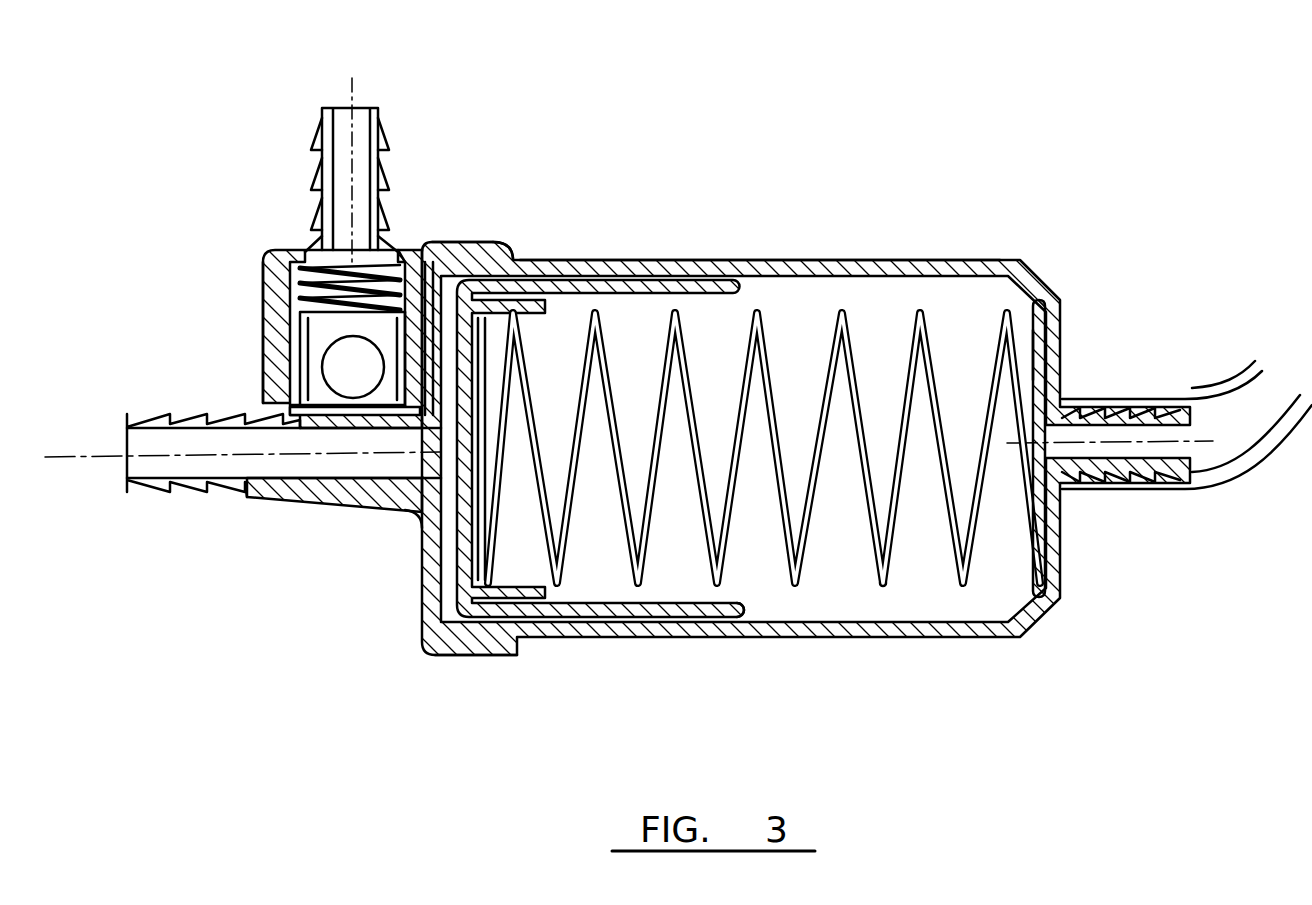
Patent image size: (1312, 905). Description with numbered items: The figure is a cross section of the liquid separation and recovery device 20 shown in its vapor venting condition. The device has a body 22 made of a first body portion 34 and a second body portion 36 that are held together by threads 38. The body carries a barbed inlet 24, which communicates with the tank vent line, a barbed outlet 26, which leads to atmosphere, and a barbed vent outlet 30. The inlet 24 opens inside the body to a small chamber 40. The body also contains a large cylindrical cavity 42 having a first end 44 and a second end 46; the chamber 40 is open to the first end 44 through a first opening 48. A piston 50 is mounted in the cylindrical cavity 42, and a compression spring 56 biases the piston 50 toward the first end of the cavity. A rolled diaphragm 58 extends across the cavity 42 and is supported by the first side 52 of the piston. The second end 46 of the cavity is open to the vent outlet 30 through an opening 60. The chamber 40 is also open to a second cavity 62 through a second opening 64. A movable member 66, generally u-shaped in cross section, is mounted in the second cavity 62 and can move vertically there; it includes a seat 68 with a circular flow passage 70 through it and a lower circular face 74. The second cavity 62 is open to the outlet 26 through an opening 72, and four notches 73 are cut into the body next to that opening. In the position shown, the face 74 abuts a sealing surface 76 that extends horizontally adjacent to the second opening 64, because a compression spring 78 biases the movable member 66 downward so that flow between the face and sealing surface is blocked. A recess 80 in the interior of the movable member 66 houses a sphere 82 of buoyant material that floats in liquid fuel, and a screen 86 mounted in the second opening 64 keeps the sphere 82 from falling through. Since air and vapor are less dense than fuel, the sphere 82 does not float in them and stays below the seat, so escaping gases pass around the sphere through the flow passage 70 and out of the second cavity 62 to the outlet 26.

The liquid separation and recovery device 20 is at (693, 712).
The body 22 is at (833, 637).
The inlet 24 is at (148, 474).
The outlet 26 is at (335, 106).
The vent outlet 30 is at (1117, 473).
The first body portion 34 is at (487, 242).
The second body portion 36 is at (657, 262).
The threads 38 is at (503, 252).
The small chamber 40 is at (293, 463).
The large cylindrical cavity 42 is at (740, 372).
The first end of cylindrical cavity 44 is at (660, 572).
The second end of cylindrical cavity 46 is at (1013, 585).
The first opening 48 is at (420, 490).
The piston 50 is at (520, 547).
The first side of piston 52 is at (425, 607).
The compression spring 56 is at (893, 557).
The rolled diaphragm 58 is at (727, 628).
The opening 60 is at (1038, 347).
The second cavity 62 is at (292, 283).
The second opening 64 is at (353, 430).
The movable member 66 is at (288, 382).
The seat 68 is at (273, 335).
The flow passage 70 is at (297, 284).
The opening 72 is at (380, 215).
The notches 73 is at (313, 242).
The lower circular face 74 is at (275, 405).
The sealing surface 76 is at (263, 357).
The compression spring 78 is at (312, 178).
The recess 80 is at (388, 260).
The sphere 82 is at (353, 367).
The screen 86 is at (428, 300).